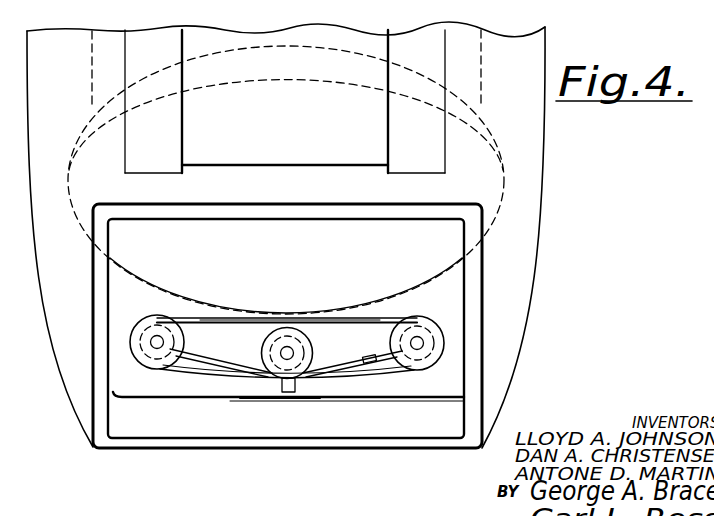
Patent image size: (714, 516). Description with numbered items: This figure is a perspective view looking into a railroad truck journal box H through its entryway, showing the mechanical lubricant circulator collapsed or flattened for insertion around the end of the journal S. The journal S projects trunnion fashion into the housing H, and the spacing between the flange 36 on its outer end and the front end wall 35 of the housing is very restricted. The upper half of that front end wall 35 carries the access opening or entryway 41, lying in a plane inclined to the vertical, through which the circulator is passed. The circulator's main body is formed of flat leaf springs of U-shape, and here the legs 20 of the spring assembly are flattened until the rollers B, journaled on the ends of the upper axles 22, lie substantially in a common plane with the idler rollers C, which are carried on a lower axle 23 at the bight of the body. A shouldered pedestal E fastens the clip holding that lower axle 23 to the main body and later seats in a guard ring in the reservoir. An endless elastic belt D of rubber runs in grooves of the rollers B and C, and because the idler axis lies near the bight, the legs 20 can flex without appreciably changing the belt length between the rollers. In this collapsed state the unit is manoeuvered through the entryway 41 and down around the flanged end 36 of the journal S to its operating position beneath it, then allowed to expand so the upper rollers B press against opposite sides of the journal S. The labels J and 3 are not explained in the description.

The cabinet J is at (546, 220).
The journal S is at (112, 42).
The top structure 3 is at (408, 0).
The flange 36 is at (500, 152).
The journal box H is at (193, 427).
The access opening 41 is at (107, 420).
The front end wall 35 is at (315, 399).
The axles 22 is at (156, 337).
The idler rollers C is at (262, 345).
The axle 23 is at (299, 352).
The roller B is at (422, 316).
The endless elastic belt D is at (377, 318).
The legs 20 is at (180, 364).
The shouldered pedestal E is at (297, 388).